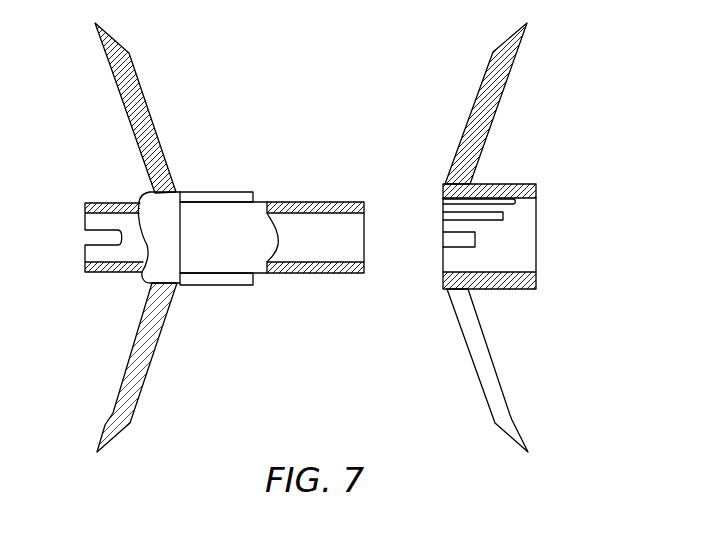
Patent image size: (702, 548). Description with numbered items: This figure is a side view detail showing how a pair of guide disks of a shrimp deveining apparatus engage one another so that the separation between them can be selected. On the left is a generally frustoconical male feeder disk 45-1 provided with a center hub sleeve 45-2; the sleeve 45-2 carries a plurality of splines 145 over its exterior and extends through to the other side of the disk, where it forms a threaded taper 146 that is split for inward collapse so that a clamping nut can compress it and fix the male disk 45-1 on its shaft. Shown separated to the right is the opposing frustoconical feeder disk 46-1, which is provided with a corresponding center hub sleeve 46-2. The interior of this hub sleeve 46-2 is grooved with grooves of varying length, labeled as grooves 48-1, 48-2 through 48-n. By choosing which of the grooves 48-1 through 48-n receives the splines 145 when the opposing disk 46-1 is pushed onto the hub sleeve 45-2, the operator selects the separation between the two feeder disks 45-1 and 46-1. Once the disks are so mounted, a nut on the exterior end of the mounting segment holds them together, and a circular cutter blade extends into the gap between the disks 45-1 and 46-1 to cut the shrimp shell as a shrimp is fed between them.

The male feeder disk 45-1 is at (147, 100).
The center hub sleeve 45-2 is at (262, 202).
The splines 145 is at (202, 192).
The threaded taper 146 is at (100, 273).
The opposing frustoconical feeder disk 46-1 is at (500, 385).
The center hub sleeve 46-2 is at (522, 184).
The groove 48-1 is at (443, 237).
The groove 48-2 is at (443, 215).
The groove 48-n is at (508, 203).